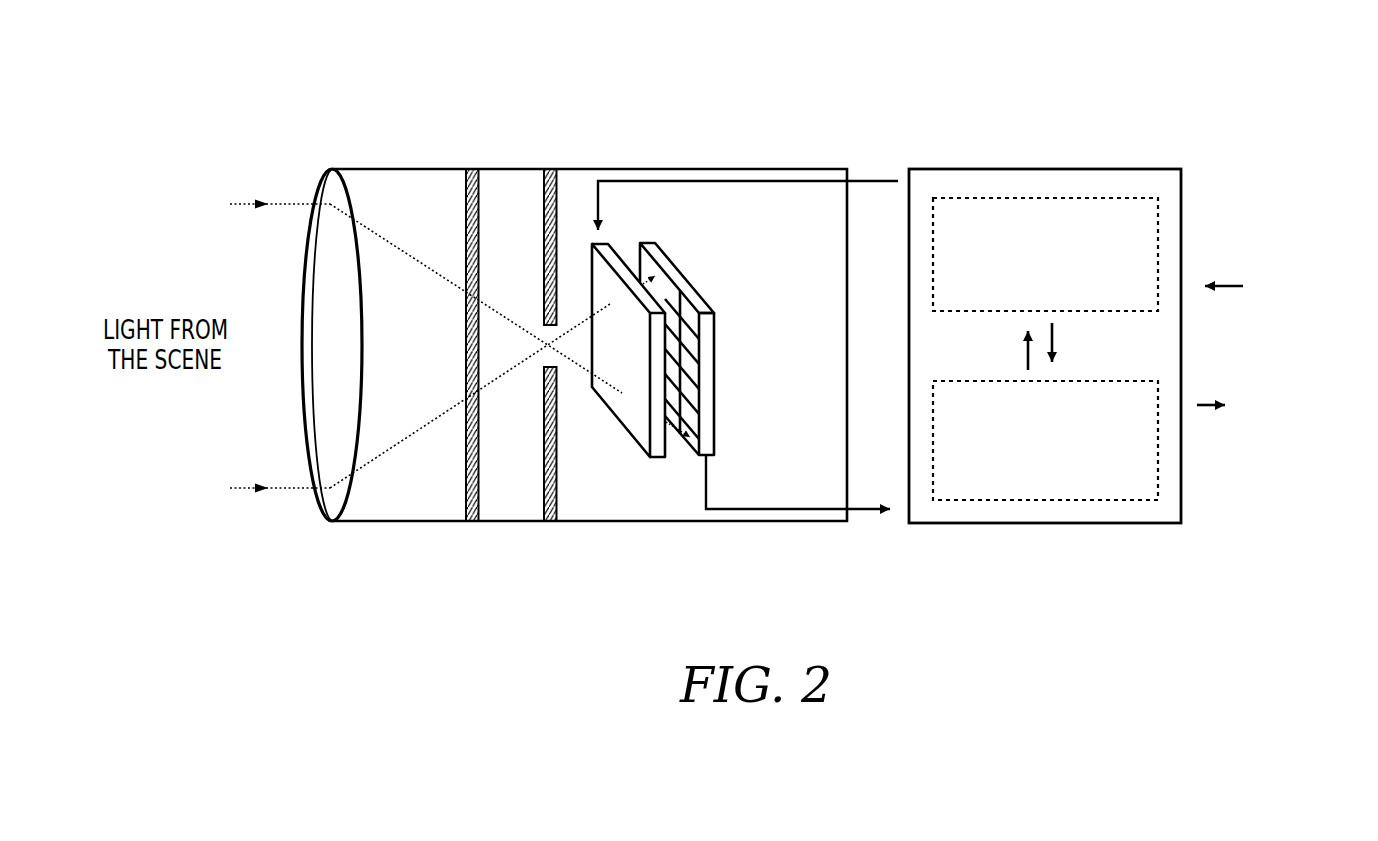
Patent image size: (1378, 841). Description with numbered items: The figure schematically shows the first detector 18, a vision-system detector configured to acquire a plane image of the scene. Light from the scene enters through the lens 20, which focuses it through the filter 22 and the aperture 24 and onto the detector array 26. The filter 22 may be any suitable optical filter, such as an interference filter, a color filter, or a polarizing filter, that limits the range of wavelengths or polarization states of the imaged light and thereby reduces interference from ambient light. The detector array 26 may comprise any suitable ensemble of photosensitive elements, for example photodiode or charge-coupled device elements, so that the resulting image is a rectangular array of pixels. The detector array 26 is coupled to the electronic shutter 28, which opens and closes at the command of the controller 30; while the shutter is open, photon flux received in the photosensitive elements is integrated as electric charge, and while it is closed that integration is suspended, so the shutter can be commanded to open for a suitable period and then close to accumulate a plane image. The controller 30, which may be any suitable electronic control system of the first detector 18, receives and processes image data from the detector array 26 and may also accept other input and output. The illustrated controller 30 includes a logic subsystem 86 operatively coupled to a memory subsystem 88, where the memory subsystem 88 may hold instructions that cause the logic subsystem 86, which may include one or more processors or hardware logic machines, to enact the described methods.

The first detector 18 is at (591, 131).
The lens 20 is at (322, 356).
The filter 22 is at (464, 433).
The aperture 24 is at (540, 329).
The detector array 26 is at (675, 277).
The electronic shutter 28 is at (605, 361).
The controller 30 is at (1117, 292).
The logic subsystem 86 is at (1032, 268).
The memory subsystem 88 is at (1032, 454).